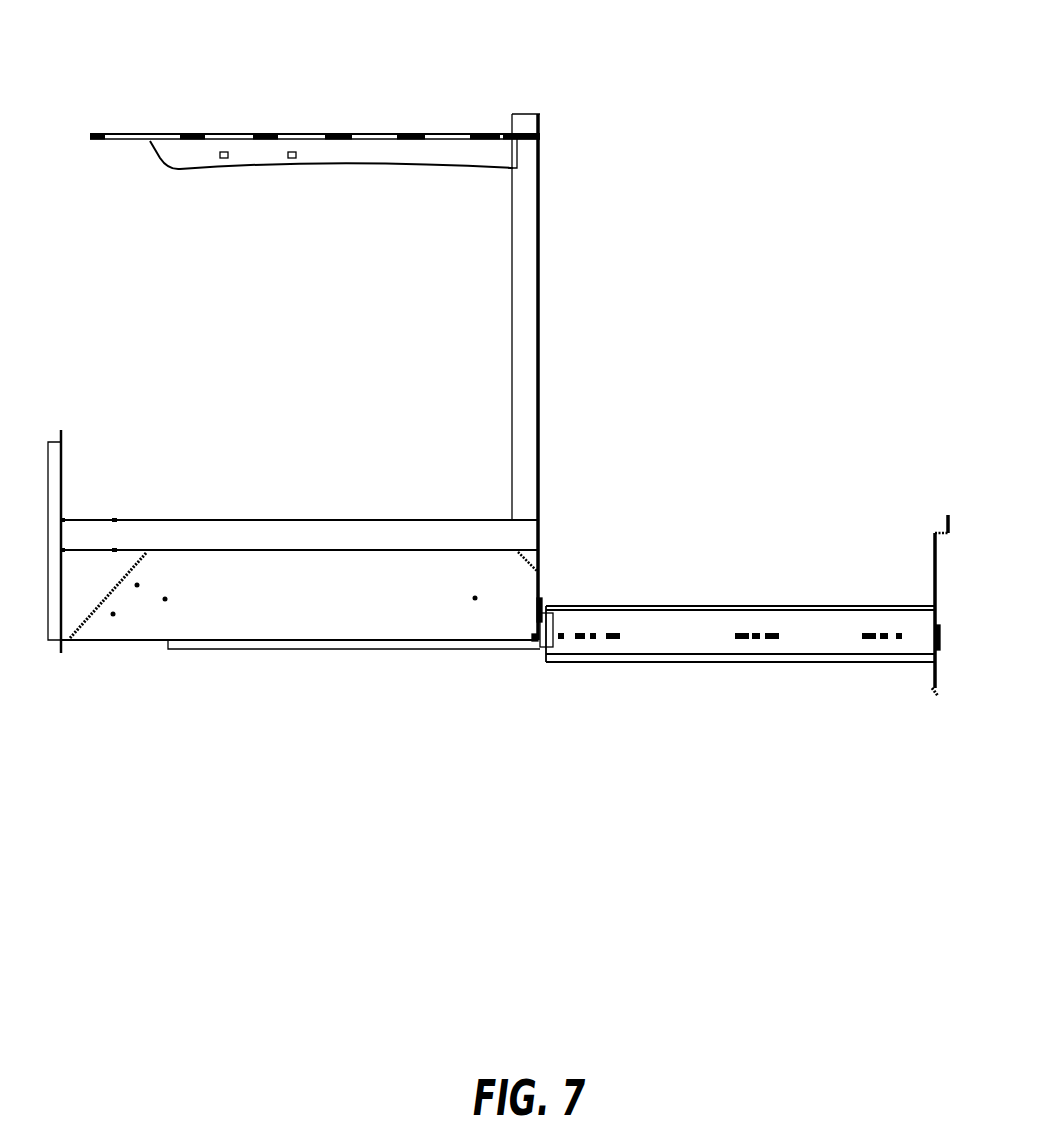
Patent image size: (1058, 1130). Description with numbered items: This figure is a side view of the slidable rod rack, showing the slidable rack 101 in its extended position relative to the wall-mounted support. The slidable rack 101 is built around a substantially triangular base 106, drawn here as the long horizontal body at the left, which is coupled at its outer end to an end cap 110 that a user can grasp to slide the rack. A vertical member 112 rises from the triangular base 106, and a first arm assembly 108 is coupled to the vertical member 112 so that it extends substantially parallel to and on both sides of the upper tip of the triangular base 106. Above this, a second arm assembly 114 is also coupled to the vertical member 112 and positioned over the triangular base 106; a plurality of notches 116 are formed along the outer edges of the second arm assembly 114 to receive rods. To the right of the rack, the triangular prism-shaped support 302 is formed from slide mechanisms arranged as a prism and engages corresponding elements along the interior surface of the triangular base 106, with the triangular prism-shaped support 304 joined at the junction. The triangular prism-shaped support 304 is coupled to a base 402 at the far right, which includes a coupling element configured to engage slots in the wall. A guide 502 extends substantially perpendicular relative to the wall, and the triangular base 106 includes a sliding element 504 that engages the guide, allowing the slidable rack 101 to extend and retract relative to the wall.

The slidable rack 101 is at (650, 42).
The triangular base 106 is at (237, 585).
The first arm assembly 108 is at (283, 520).
The end cap 110 is at (50, 463).
The vertical member 112 is at (524, 240).
The second arm assembly 114 is at (308, 134).
The notches 116 is at (253, 134).
The triangular prism-shaped support 302 is at (698, 636).
The triangular prism-shaped support 304 is at (539, 640).
The base 402 is at (932, 572).
The guide 502 is at (932, 696).
The sliding element 504 is at (948, 512).